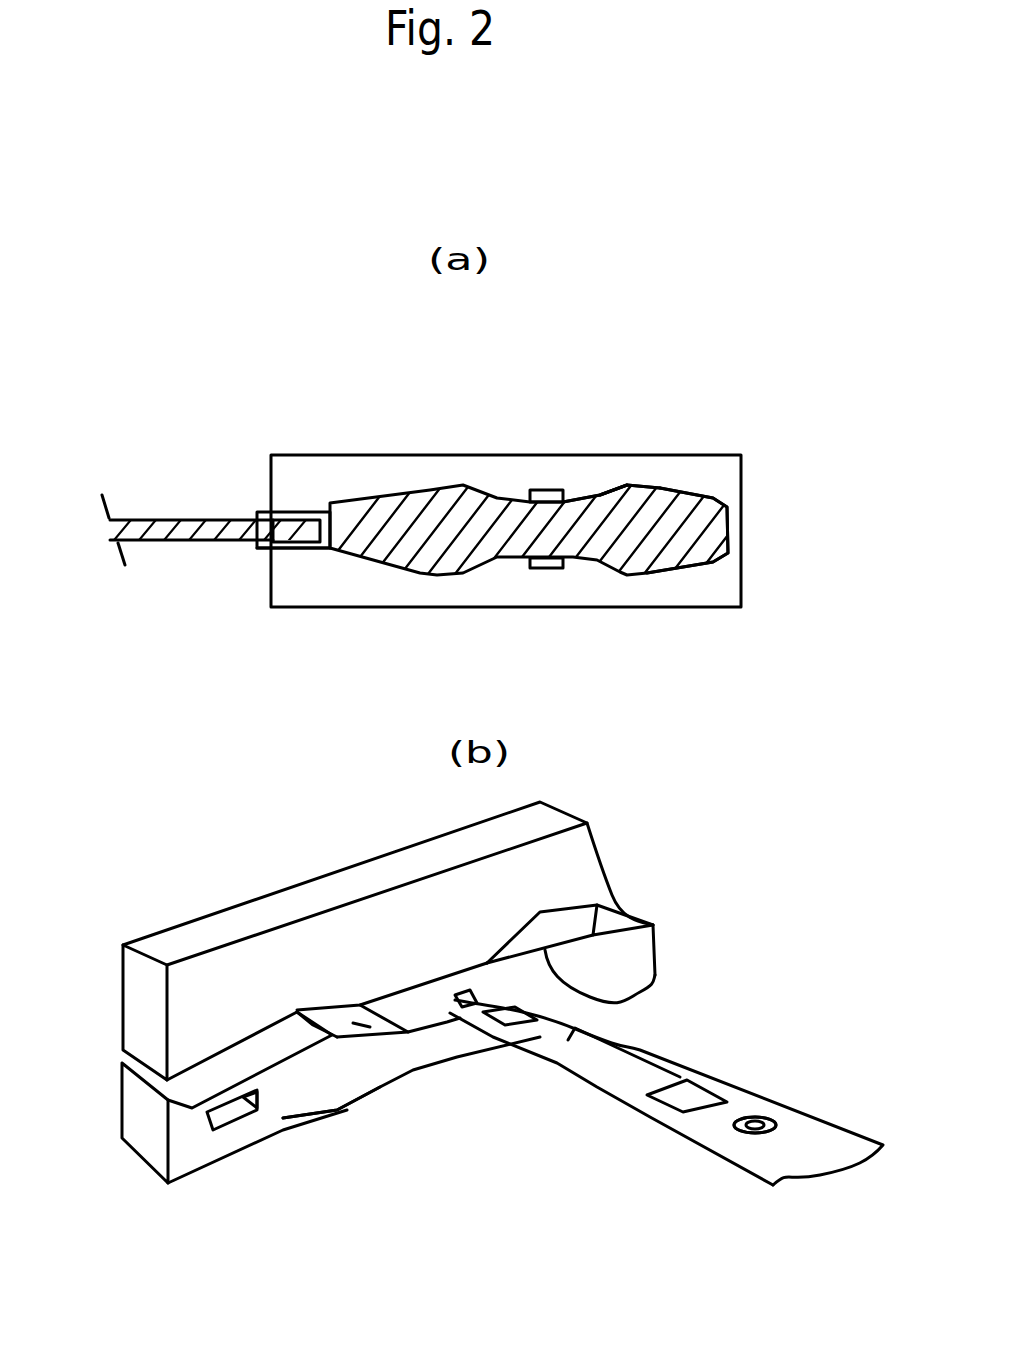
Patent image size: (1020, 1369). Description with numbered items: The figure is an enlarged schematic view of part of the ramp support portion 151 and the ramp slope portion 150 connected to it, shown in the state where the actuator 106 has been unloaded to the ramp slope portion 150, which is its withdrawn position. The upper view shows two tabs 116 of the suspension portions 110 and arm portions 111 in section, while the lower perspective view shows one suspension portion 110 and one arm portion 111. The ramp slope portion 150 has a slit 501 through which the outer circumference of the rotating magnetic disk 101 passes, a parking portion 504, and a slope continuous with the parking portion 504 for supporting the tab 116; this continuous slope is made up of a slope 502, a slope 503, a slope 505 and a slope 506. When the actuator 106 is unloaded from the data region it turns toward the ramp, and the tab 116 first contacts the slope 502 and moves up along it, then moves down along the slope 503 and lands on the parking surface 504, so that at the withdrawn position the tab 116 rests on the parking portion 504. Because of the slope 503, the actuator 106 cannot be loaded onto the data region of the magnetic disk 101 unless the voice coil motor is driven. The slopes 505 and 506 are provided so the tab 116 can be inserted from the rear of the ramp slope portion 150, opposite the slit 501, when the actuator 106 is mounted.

The magnetic disk 101 is at (173, 512).
The ramp support portion 151 is at (303, 455).
The slit 501 is at (280, 547).
The slope 502 is at (372, 492).
The slope 503 is at (478, 490).
The parking portion 504 is at (583, 492).
The slope 505 is at (598, 495).
The slope 506 is at (688, 490).
The tab 116 is at (540, 490).
The ramp slope portion 150 is at (355, 1113).
The actuator 106 is at (812, 1104).
The suspension portion 110 is at (600, 1087).
The arm portion 111 is at (715, 1130).